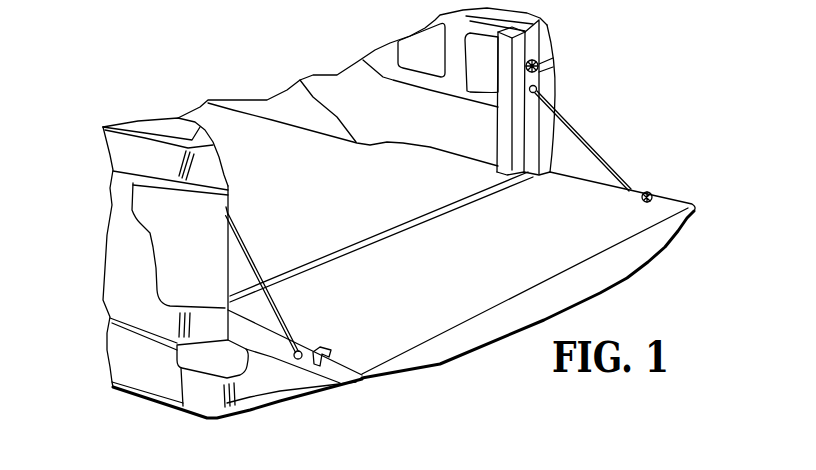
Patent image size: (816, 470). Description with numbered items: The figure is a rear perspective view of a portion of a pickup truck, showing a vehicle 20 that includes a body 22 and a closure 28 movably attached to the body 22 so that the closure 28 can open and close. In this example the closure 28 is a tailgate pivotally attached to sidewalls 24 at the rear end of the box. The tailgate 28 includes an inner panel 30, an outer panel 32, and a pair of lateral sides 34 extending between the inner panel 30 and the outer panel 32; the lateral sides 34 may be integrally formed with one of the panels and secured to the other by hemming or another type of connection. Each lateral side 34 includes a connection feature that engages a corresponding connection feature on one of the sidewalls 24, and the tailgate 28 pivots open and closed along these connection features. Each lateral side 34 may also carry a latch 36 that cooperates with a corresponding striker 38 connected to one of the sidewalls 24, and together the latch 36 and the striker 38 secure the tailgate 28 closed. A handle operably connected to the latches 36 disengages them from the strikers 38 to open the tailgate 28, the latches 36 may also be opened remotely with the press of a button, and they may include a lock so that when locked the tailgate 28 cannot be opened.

The vehicle 20 is at (263, 67).
The body 22 is at (148, 155).
The sidewalls 24 is at (495, 22).
The closure 28 is at (602, 193).
The inner panel 30 is at (466, 275).
The outer panel 32 is at (352, 392).
The lateral sides 34 is at (263, 345).
The latch 36 is at (647, 194).
The striker 38 is at (543, 62).